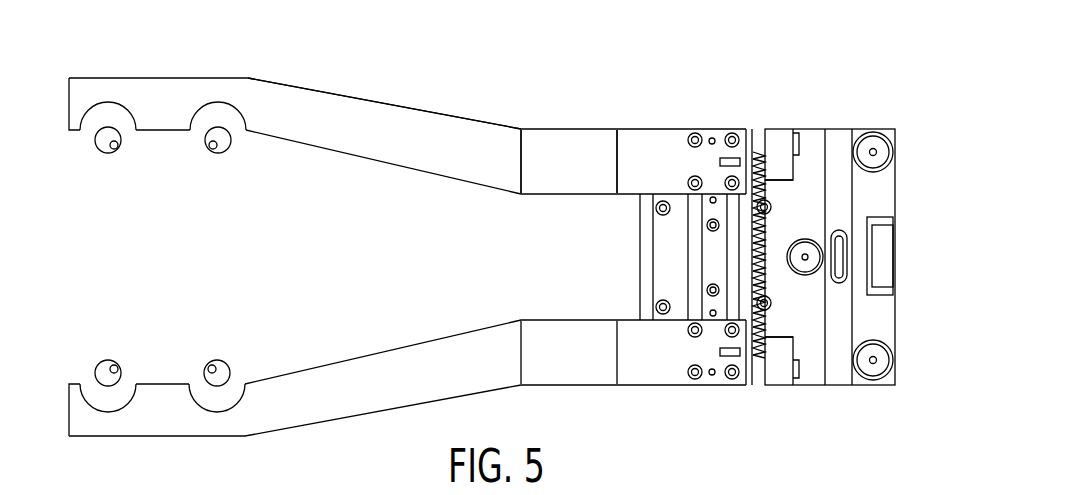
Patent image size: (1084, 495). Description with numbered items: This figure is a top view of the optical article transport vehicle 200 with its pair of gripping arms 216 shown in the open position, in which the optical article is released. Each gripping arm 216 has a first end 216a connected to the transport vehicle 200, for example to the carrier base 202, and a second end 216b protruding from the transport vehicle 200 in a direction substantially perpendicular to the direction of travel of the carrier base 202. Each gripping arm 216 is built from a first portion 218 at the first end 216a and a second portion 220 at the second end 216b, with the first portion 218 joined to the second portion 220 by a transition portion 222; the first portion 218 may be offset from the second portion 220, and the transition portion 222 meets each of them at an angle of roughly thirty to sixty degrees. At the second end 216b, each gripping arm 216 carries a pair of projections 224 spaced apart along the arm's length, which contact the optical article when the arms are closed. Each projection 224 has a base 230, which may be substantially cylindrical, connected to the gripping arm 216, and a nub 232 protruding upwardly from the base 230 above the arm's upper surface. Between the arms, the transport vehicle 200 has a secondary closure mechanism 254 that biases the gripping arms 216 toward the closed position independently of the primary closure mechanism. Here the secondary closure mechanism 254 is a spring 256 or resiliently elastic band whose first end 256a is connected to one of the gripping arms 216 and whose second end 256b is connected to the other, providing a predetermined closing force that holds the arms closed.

The transport vehicle 200 is at (766, 69).
The carrier base 202 is at (762, 130).
The gripping arm 216 is at (328, 91).
The first end 216a is at (636, 108).
The second end 216b is at (71, 72).
The first portion 218 is at (688, 131).
The second portion 220 is at (393, 116).
The transition portion 222 is at (548, 144).
The projection 224 is at (94, 131).
The base 230 is at (233, 133).
The nub 232 is at (215, 149).
The secondary closure mechanism 254 is at (794, 317).
The spring 256 is at (767, 258).
The first end of spring 256a is at (770, 210).
The second end of spring 256b is at (767, 307).